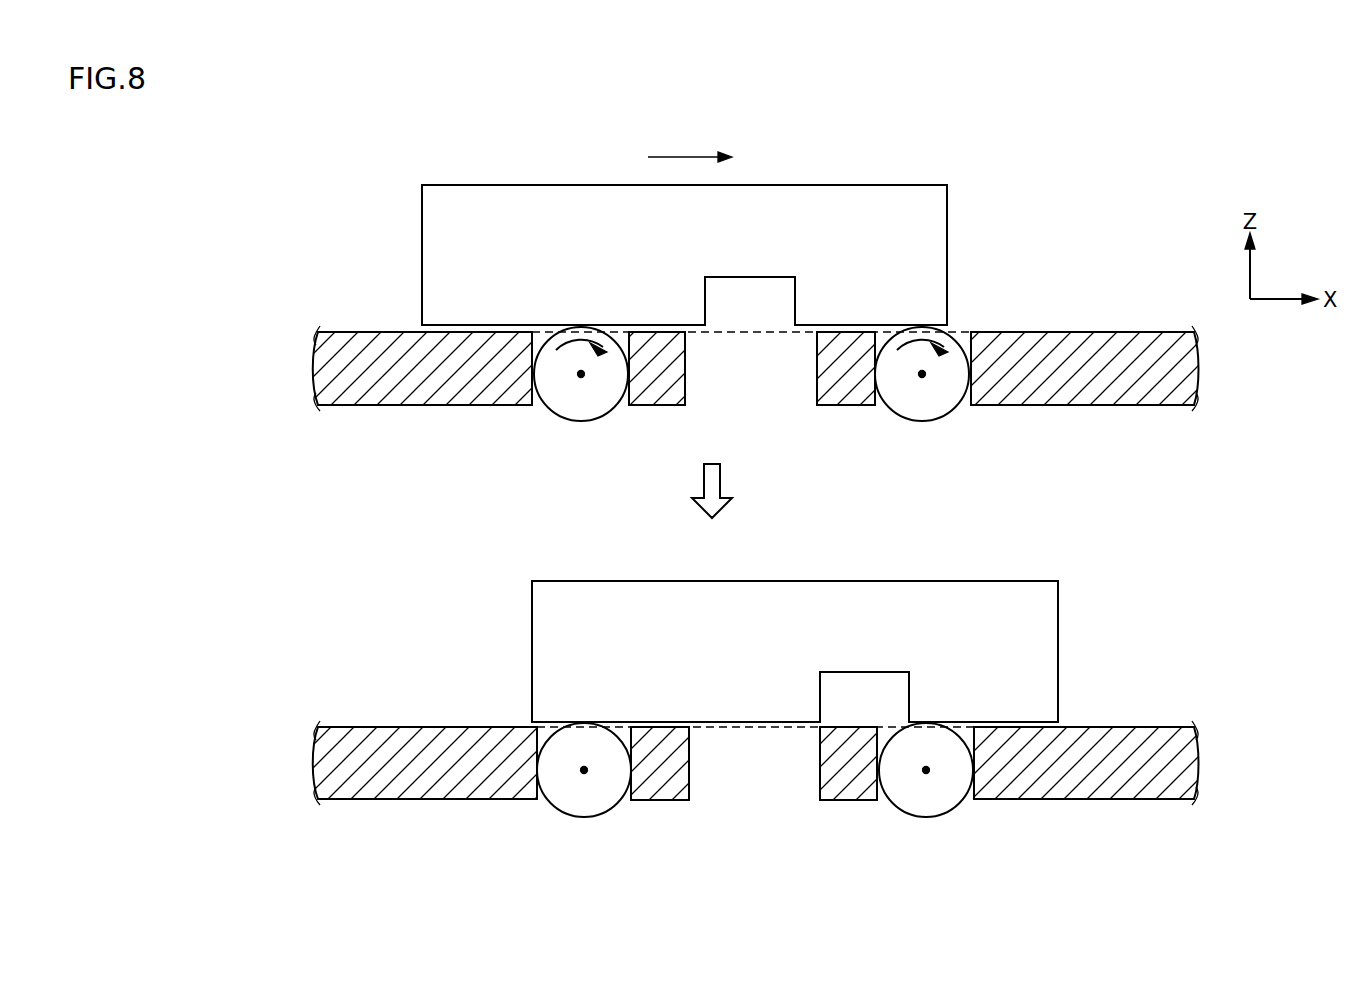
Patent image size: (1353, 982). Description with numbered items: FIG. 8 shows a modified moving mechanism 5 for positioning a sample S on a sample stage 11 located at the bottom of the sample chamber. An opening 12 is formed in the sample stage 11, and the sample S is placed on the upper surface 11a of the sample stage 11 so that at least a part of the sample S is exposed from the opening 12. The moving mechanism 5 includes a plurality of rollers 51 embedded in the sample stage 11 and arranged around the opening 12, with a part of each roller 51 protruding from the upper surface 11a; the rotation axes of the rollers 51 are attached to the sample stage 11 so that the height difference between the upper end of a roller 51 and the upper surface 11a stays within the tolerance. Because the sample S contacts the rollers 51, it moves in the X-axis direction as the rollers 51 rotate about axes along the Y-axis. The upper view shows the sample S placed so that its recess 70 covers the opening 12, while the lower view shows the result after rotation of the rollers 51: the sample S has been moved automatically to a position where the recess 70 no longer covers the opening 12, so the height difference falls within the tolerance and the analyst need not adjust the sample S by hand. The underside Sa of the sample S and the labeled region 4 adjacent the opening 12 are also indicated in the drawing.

The sample S is at (937, 253).
The lower surface of sheet Sa is at (762, 279).
The recess 70 is at (707, 302).
The sample stage 11 is at (1125, 396).
The upper surface of the sample stage 11a is at (1085, 332).
The opening 12 is at (818, 385).
The rib 4 is at (818, 786).
The roller 51 is at (582, 409).
The moving mechanism 5 is at (532, 432).